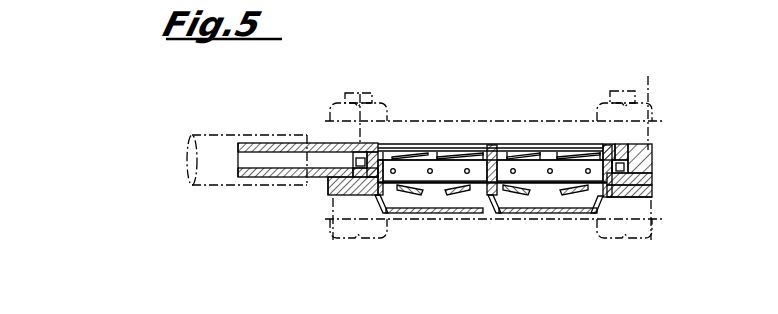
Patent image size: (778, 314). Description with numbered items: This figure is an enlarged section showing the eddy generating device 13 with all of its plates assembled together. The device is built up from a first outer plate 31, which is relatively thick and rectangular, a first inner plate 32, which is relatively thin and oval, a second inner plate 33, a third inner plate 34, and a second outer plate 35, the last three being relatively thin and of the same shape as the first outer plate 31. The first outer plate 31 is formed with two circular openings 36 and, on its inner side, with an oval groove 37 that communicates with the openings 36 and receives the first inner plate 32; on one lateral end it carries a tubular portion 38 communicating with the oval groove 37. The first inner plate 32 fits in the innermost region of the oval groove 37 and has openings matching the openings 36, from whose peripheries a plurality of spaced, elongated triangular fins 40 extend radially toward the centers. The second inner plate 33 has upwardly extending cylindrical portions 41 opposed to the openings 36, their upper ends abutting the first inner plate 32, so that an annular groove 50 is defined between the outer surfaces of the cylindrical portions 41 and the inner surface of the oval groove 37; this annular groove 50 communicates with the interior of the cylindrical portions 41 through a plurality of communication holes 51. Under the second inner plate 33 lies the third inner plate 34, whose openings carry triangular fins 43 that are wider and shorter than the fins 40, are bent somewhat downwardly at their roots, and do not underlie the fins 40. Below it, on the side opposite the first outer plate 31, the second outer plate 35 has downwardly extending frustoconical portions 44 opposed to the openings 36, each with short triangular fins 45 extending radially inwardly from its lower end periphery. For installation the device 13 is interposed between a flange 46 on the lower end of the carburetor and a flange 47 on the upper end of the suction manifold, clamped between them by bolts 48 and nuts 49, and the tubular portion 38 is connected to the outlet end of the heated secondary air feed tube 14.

The eddy generating device 13 is at (256, 245).
The heated secondary air feed tube 14 is at (228, 188).
The first outer plate 31 is at (648, 152).
The first inner plate 32 is at (628, 147).
The second inner plate 33 is at (654, 175).
The third inner plate 34 is at (654, 190).
The second outer plate 35 is at (642, 198).
The circular openings 36 is at (447, 150).
The oval groove 37 is at (362, 150).
The tubular portion 38 is at (268, 146).
The elongated triangular fins 40 is at (478, 156).
The cylindrical portions 41 is at (381, 160).
The triangular fins 43 is at (463, 194).
The frustoconical portions 44 is at (378, 207).
The short triangular fins 45 is at (419, 214).
The flange 46 is at (338, 135).
The flange 47 is at (336, 205).
The bolts 48 is at (338, 228).
The nuts 49 is at (337, 110).
The annular groove 50 is at (329, 198).
The communication holes 51 is at (430, 168).